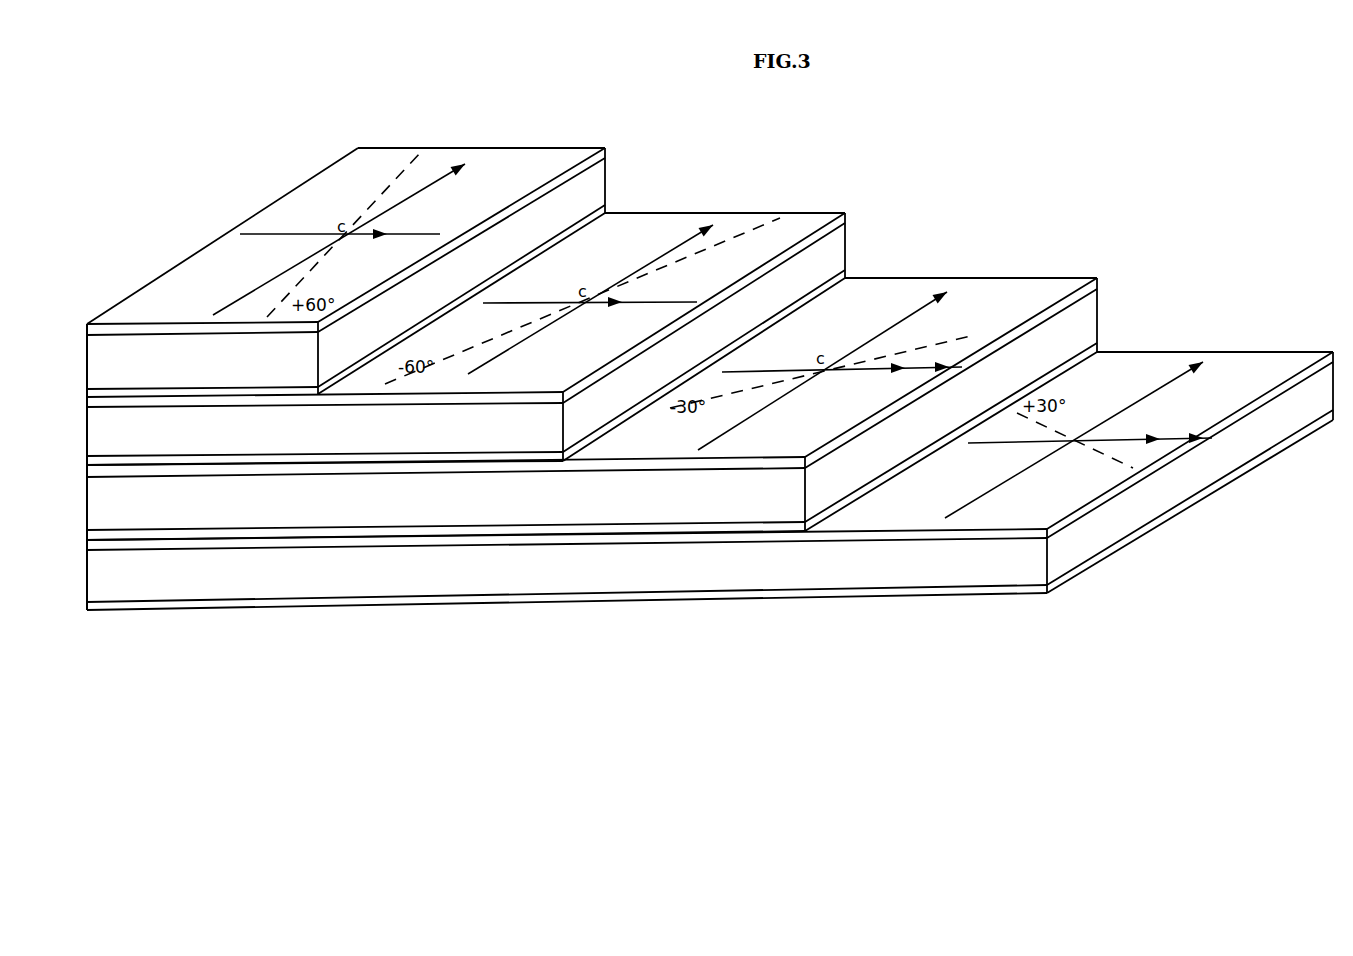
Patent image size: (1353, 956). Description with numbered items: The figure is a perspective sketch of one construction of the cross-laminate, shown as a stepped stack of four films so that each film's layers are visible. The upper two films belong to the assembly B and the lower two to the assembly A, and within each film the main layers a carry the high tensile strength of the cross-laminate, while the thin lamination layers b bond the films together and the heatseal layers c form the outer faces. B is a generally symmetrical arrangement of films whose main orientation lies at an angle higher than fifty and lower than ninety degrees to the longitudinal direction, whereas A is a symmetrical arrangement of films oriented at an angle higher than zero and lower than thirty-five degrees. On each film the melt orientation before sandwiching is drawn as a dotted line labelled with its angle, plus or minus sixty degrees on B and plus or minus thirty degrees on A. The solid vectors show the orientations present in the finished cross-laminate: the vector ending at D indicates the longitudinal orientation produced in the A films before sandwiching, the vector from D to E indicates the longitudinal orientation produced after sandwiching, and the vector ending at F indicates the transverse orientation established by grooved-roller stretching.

The film assembly A is at (762, 436).
The film assembly B is at (466, 298).
The main layers a is at (90, 359).
The lamination layers b is at (90, 396).
The heatseal layers c is at (90, 326).
The vector point D is at (1028, 403).
The vector point E is at (726, 330).
The vector point F is at (714, 336).